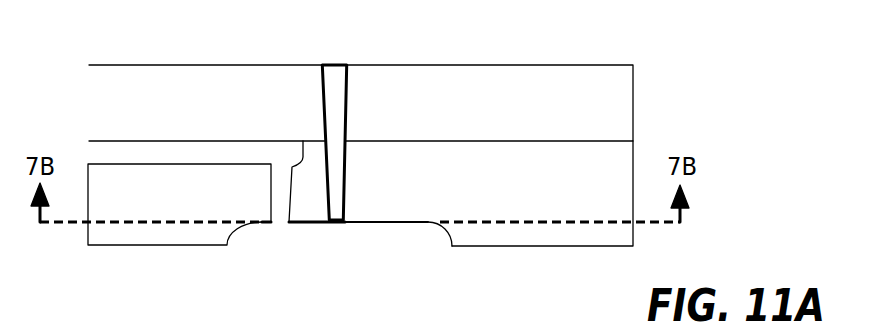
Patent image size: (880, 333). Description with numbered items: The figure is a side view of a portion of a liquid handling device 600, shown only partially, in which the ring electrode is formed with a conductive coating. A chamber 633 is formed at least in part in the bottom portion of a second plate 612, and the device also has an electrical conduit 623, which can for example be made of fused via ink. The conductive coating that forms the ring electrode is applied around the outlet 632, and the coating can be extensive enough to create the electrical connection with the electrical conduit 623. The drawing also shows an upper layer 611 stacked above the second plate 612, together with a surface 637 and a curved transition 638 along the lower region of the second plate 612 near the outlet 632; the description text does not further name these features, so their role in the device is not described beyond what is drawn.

The liquid handling device 600 is at (600, 50).
The first layer 611 is at (635, 95).
The second plate 612 is at (635, 158).
The electrical conduit 623 is at (343, 187).
The outlet 632 is at (280, 213).
The chamber 633 is at (250, 245).
The ledge surface 637 is at (400, 223).
The curved transition 638 is at (443, 235).